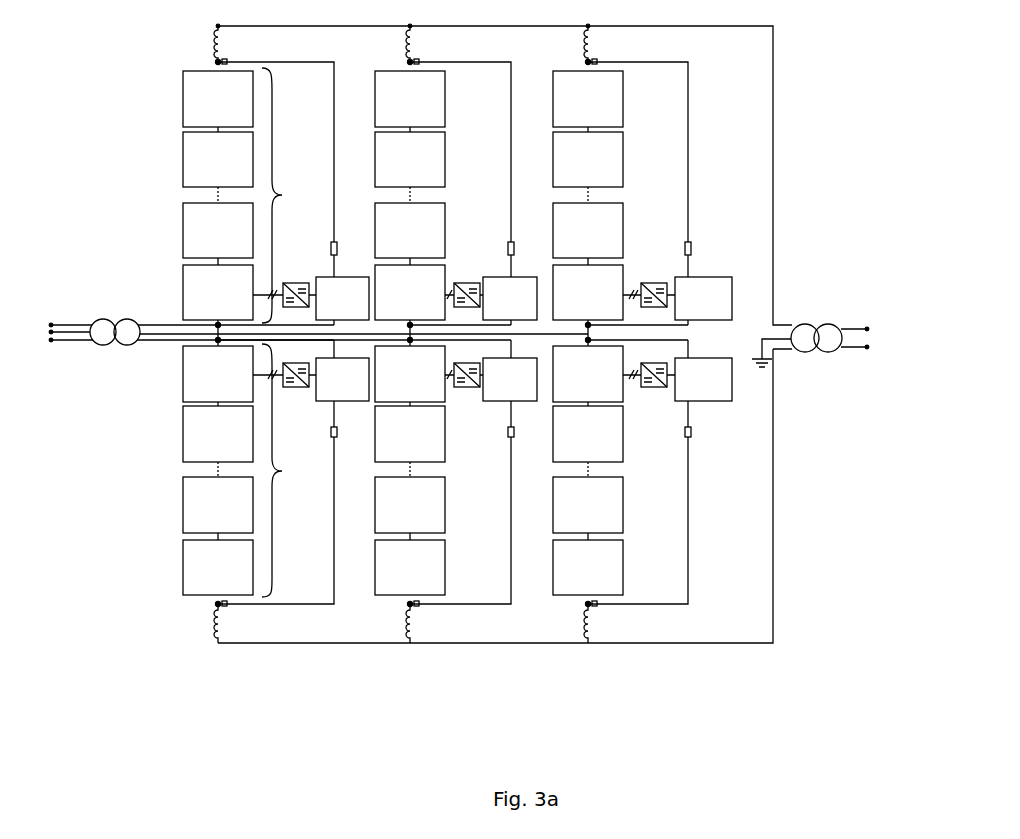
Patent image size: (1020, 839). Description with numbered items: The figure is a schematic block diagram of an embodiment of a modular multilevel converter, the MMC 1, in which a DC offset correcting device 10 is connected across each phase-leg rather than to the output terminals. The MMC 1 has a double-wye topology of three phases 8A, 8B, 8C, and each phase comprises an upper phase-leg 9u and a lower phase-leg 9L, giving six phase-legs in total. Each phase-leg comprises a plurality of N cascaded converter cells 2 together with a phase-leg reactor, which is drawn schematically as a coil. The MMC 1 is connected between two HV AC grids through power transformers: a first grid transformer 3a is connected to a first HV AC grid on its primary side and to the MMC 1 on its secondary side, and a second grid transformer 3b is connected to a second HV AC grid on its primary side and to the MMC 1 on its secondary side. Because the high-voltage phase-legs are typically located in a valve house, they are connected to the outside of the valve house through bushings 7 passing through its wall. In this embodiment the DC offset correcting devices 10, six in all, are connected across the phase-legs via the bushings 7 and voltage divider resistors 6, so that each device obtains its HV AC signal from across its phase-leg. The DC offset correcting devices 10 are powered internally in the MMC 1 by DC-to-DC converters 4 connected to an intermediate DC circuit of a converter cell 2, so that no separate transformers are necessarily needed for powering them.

The MMC 1 is at (836, 110).
The converter cell 2 is at (403, 333).
The first grid transformer 3a is at (113, 352).
The second grid transformer 3b is at (822, 365).
The DC-to-DC converter 4 is at (297, 283).
The voltage divider resistor 6 is at (335, 242).
The bushing 7 is at (227, 62).
The phase A 8A is at (226, 656).
The phase B 8B is at (416, 656).
The phase C 8C is at (591, 656).
The upper phase-leg 9u is at (283, 195).
The lower phase-leg 9L is at (283, 470).
The DC offset correcting device 10 is at (360, 277).